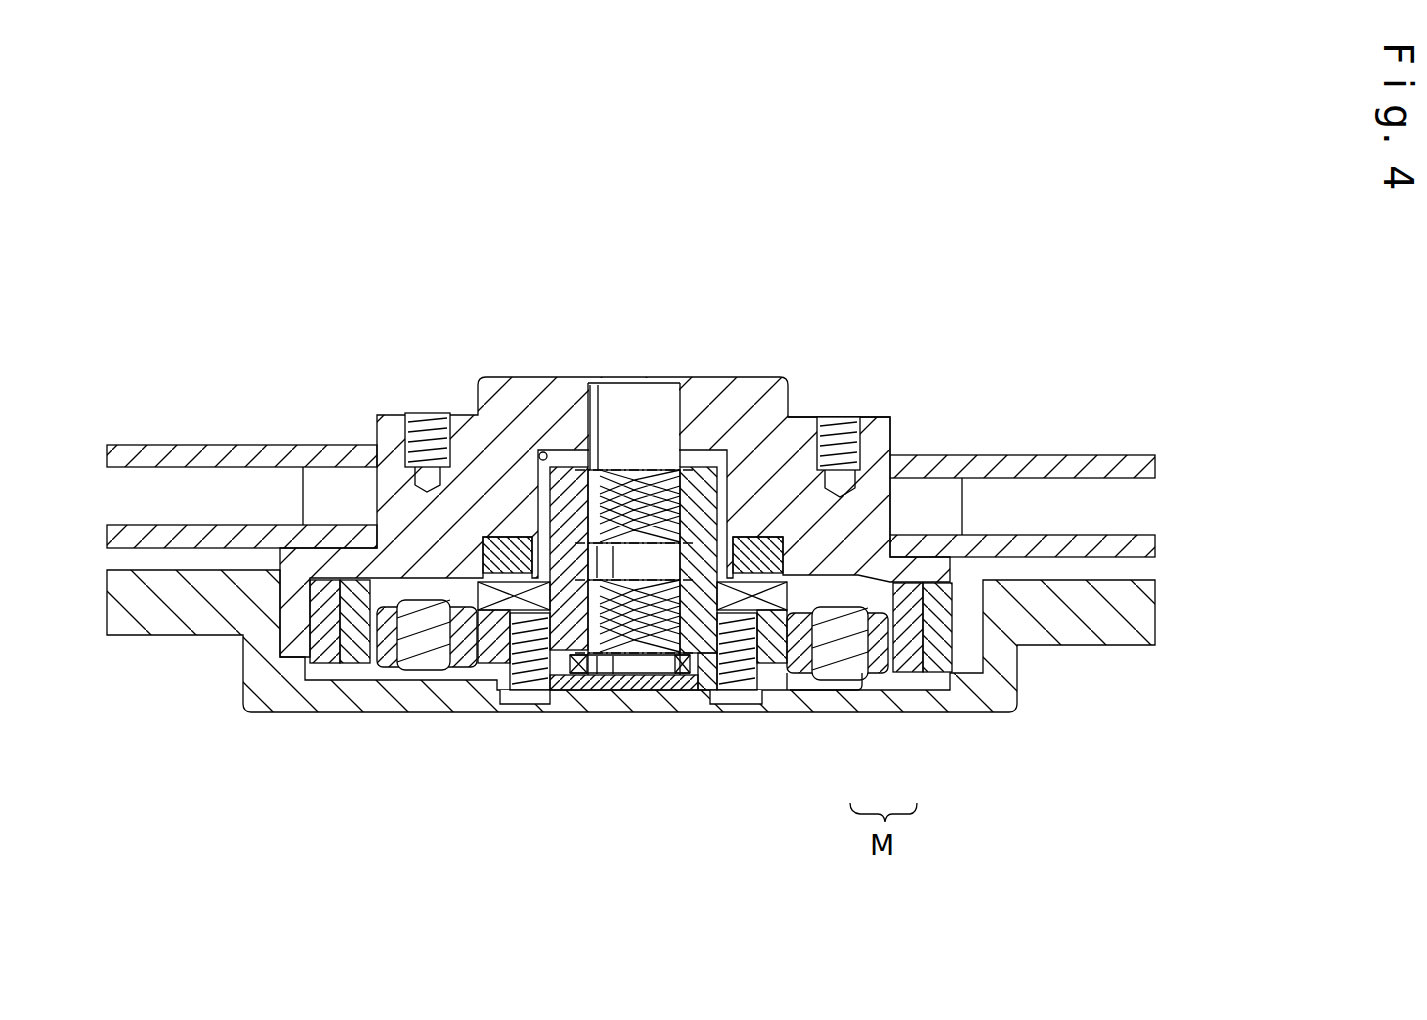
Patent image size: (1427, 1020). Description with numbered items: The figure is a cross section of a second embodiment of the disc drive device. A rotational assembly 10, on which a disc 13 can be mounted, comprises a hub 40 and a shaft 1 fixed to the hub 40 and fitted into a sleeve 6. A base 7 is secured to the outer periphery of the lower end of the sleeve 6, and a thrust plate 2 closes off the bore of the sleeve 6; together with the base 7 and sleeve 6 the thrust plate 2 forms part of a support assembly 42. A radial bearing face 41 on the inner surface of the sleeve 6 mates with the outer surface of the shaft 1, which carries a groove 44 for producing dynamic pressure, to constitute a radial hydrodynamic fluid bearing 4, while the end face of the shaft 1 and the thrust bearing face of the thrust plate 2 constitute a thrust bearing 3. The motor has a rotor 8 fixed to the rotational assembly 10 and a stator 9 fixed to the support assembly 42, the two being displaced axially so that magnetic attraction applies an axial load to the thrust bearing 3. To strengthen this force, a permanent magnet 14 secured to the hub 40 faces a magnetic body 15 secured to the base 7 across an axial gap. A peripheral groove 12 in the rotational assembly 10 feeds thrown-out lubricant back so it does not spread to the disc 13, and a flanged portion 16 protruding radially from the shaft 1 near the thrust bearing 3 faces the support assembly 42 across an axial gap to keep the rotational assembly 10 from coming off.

The shaft 1 is at (642, 415).
The thrust plate 2 is at (686, 690).
The thrust bearing 3 is at (605, 690).
The radial hydrodynamic fluid bearing 4 is at (565, 470).
The sleeve 6 is at (700, 470).
The base 7 is at (1140, 621).
The rotor 8 is at (912, 672).
The stator 9 is at (856, 680).
The rotational assembly 10 is at (888, 418).
The peripheral groove 12 is at (547, 445).
The disc 13 is at (1086, 455).
The permanent magnet 14 is at (483, 552).
The magnetic body 15 is at (762, 655).
The flanged portion 16 is at (563, 680).
The hub 40 is at (812, 455).
The radial bearing face 41 is at (420, 430).
The support assembly 42 is at (782, 535).
The groove 44 is at (600, 470).